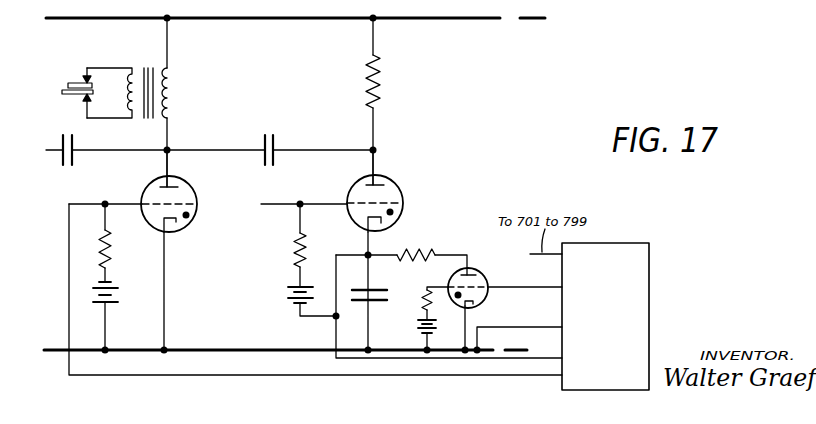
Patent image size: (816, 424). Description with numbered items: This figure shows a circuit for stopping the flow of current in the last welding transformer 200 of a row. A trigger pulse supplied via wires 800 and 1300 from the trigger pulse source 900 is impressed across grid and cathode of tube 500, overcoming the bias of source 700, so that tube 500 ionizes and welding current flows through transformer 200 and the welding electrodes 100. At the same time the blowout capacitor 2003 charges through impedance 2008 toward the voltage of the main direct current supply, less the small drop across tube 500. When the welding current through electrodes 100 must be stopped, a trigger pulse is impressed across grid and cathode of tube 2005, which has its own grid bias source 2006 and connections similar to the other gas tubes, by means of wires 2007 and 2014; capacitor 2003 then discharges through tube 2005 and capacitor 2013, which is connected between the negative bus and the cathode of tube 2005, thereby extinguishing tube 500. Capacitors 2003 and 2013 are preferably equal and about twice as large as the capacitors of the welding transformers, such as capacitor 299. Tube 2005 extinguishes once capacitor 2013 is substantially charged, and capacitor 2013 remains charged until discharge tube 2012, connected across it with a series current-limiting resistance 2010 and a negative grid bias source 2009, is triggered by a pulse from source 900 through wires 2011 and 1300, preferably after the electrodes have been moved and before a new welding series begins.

The electrodes 100 is at (82, 96).
The transformer 200 is at (148, 62).
The capacitor 299 is at (63, 136).
The tube 500 is at (157, 190).
The bias source 700 is at (115, 290).
The wire 800 is at (69, 310).
The blowout capacitor 2003 is at (271, 132).
The tube 2005 is at (358, 192).
The bias battery 2006 is at (290, 299).
The wire 2007 is at (261, 252).
The impedance 2008 is at (380, 101).
The negative grid bias source 2009 is at (421, 329).
The current-limiting resistance 2010 is at (398, 246).
The wire 2011 is at (495, 287).
The discharge tube 2012 is at (478, 272).
The capacitor 2013 is at (393, 286).
The wire 2014 is at (337, 323).
The wire 1300 is at (490, 331).
The trigger pulse source 900 is at (641, 295).